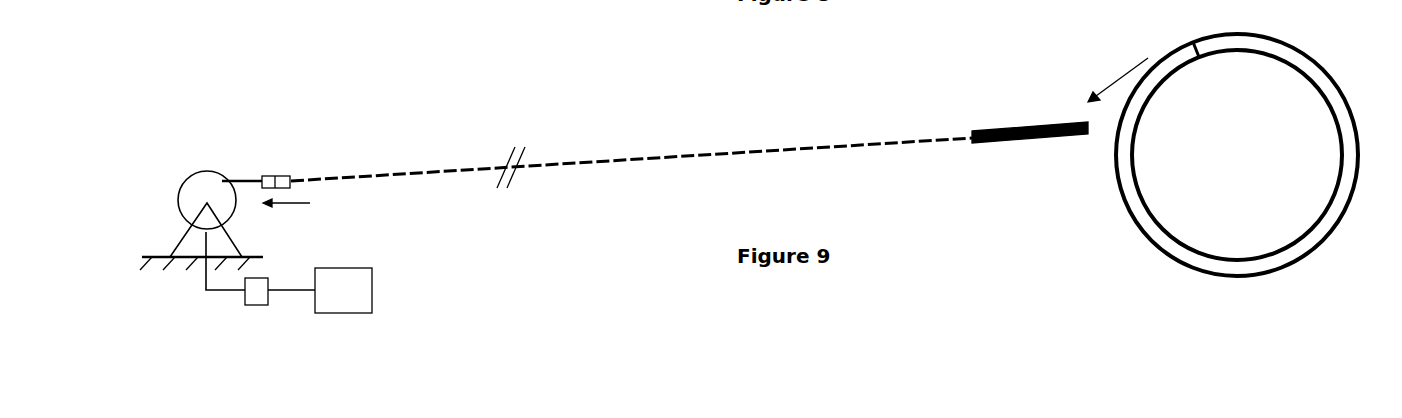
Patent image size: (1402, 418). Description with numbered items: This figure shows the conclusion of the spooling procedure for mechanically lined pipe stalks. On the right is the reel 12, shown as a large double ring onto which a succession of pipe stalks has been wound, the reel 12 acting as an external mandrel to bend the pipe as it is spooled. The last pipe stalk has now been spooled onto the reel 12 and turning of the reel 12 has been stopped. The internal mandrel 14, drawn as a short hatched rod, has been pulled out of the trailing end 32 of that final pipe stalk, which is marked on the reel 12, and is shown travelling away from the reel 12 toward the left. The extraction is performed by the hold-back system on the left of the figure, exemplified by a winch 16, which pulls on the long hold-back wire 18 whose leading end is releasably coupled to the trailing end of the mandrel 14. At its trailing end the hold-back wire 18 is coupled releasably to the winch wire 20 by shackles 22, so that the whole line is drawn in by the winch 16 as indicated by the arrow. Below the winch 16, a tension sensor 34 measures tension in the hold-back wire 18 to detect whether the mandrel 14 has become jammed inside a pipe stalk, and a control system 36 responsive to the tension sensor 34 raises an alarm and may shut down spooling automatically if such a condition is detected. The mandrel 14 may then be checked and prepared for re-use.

The reel 12 is at (1303, 117).
The internal mandrel 14 is at (1028, 120).
The winch 16 is at (192, 195).
The hold-back wire 18 is at (667, 155).
The winch wire 20 is at (245, 177).
The shackles 22 is at (272, 172).
The trailing end 32 is at (1195, 47).
The tension sensor 34 is at (267, 283).
The control system 36 is at (350, 280).